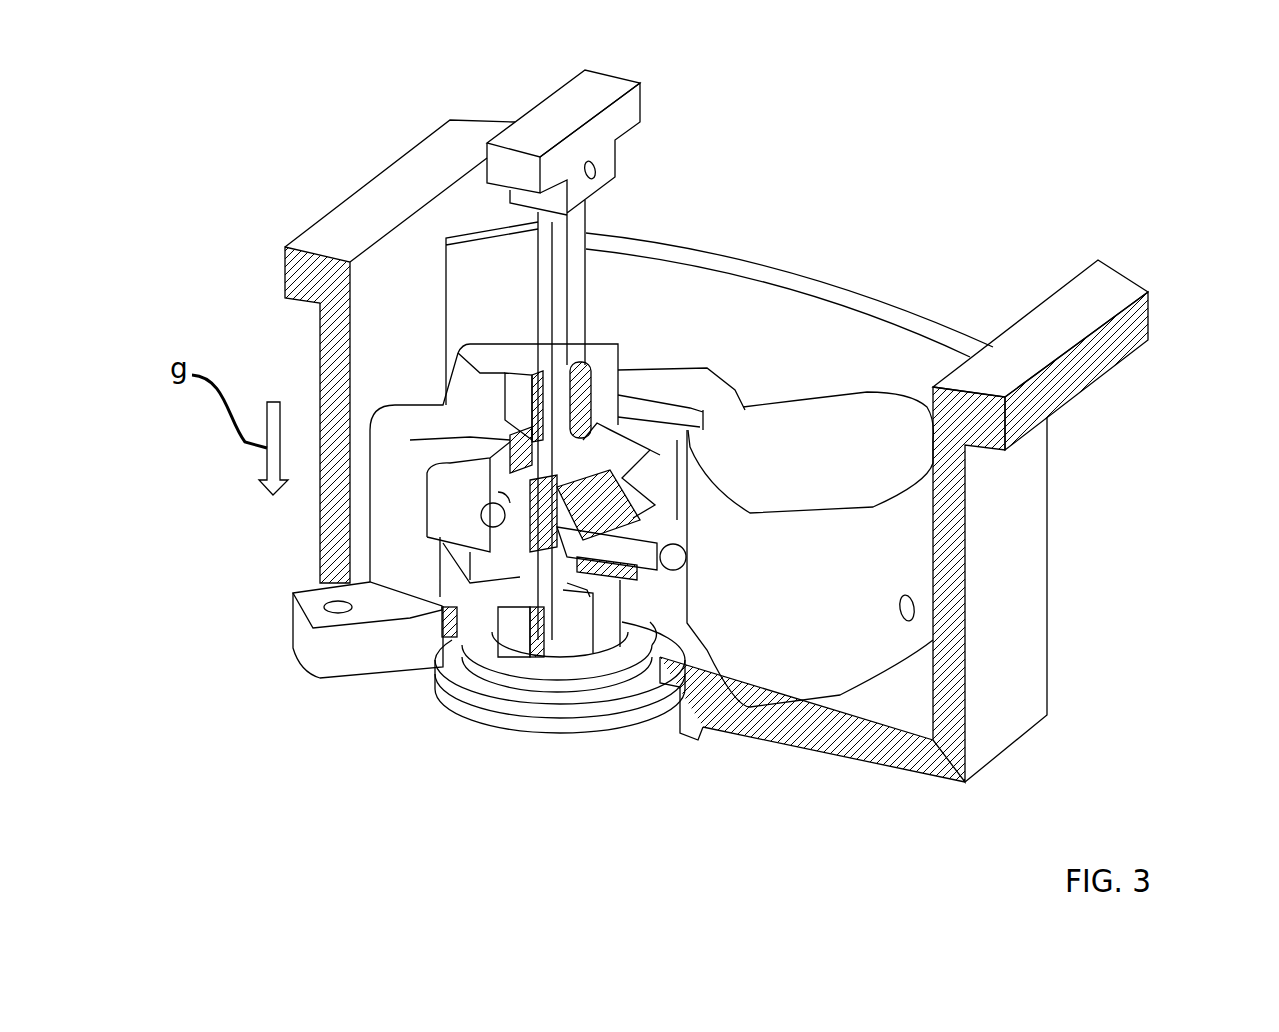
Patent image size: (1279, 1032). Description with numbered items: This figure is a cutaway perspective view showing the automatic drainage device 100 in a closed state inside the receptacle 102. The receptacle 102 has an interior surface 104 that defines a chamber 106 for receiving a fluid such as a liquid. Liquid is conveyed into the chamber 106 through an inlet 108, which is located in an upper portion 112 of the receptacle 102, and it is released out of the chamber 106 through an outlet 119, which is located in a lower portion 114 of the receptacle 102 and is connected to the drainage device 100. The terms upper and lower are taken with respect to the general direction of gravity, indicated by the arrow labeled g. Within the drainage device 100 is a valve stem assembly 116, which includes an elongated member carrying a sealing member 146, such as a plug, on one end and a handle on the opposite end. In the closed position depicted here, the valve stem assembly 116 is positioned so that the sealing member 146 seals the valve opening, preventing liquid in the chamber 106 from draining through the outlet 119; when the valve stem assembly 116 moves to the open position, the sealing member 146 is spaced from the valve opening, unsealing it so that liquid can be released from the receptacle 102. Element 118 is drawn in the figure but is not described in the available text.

The automatic drainage device 100 is at (694, 332).
The receptacle 102 is at (1023, 578).
The interior surface 104 is at (402, 307).
The chamber 106 is at (503, 287).
The inlet 108 is at (909, 274).
The upper portion 112 is at (265, 303).
The lower portion 114 is at (266, 600).
The valve stem assembly 116 is at (588, 294).
The chamber 118 is at (790, 635).
The outlet 119 is at (650, 630).
The sealing member 146 is at (453, 718).